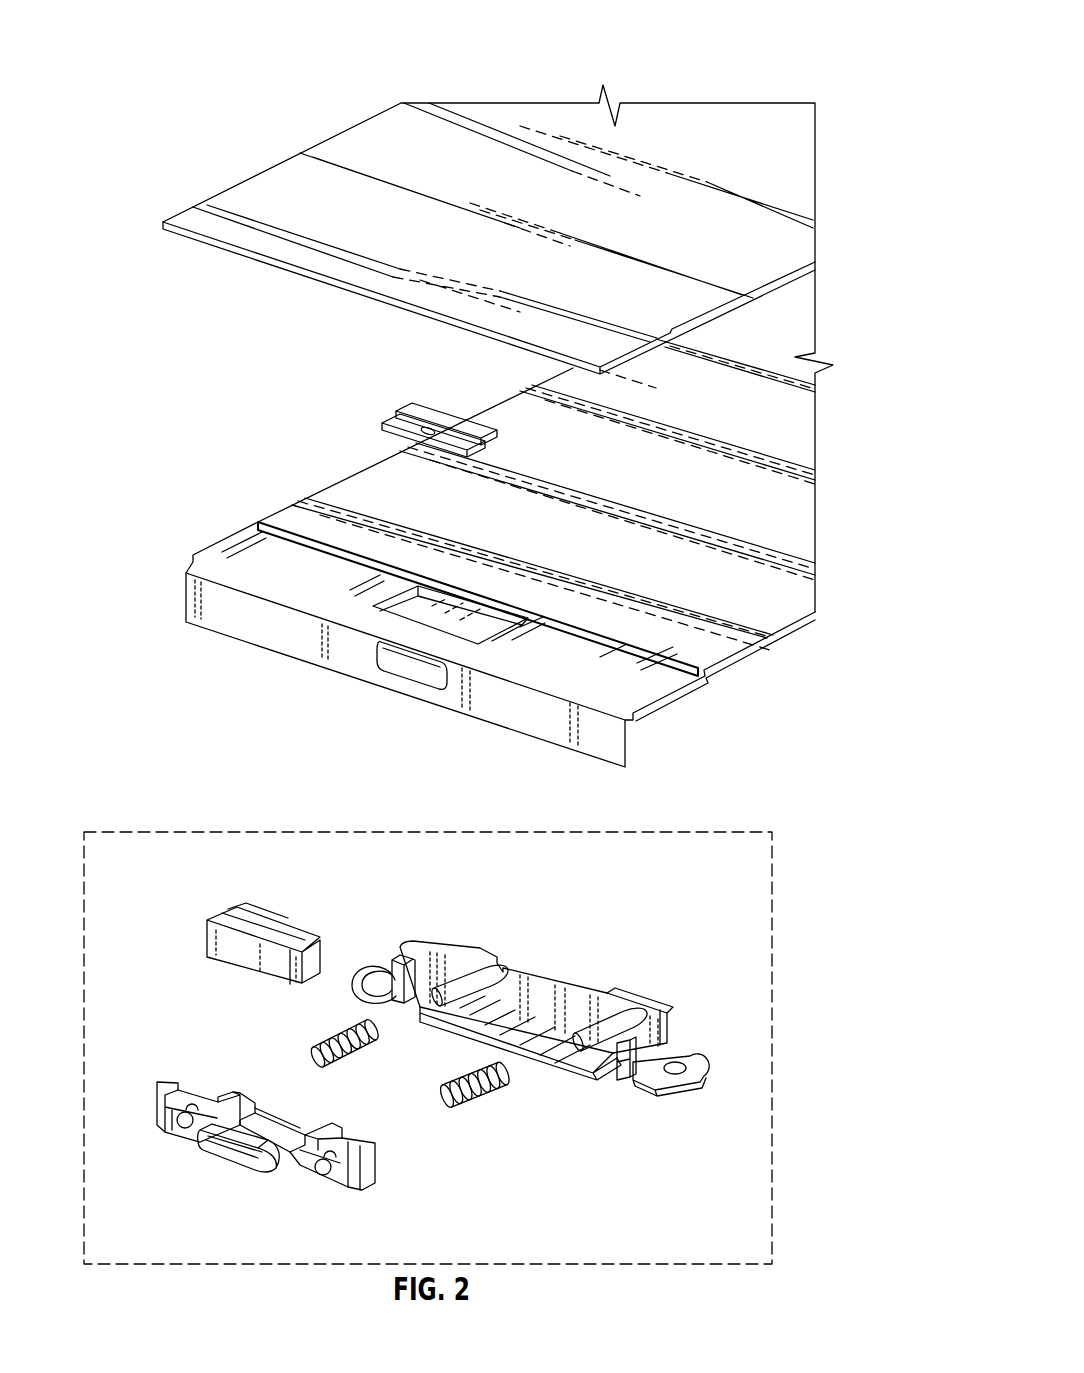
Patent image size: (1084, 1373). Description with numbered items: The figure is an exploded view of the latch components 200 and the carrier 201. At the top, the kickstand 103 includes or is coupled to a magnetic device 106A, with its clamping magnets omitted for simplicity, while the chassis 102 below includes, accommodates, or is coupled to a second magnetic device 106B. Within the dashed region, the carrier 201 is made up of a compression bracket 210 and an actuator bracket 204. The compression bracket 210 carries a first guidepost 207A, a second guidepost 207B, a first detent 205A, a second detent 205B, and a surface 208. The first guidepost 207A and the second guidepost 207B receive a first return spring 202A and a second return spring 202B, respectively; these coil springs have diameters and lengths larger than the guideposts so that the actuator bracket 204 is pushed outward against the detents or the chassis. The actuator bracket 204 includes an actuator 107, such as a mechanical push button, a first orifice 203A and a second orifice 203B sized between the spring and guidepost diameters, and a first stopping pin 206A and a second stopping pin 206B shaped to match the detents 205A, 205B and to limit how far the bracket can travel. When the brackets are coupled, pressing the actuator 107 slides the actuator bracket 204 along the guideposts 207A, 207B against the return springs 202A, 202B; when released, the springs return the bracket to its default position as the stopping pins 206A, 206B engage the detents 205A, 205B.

The latch components 200 is at (647, 38).
The chassis 102 is at (186, 574).
The kickstand 103 is at (162, 226).
The magnetic device 106A is at (382, 427).
The magnetic device 106B is at (207, 945).
The carrier 201 is at (772, 978).
The compression bracket 210 is at (520, 888).
The surface 208 is at (522, 1027).
The first detent 205A is at (400, 953).
The second detent 205B is at (643, 1025).
The first guidepost 207A is at (460, 983).
The second guidepost 207B is at (612, 1015).
The first return spring 202A is at (310, 1043).
The second return spring 202B is at (440, 1105).
The actuator bracket 204 is at (222, 1225).
The first stopping pin 206A is at (163, 1070).
The second stopping pin 206B is at (367, 1145).
The first orifice 203A is at (177, 1114).
The second orifice 203B is at (313, 1162).
The actuator 107 is at (225, 1162).